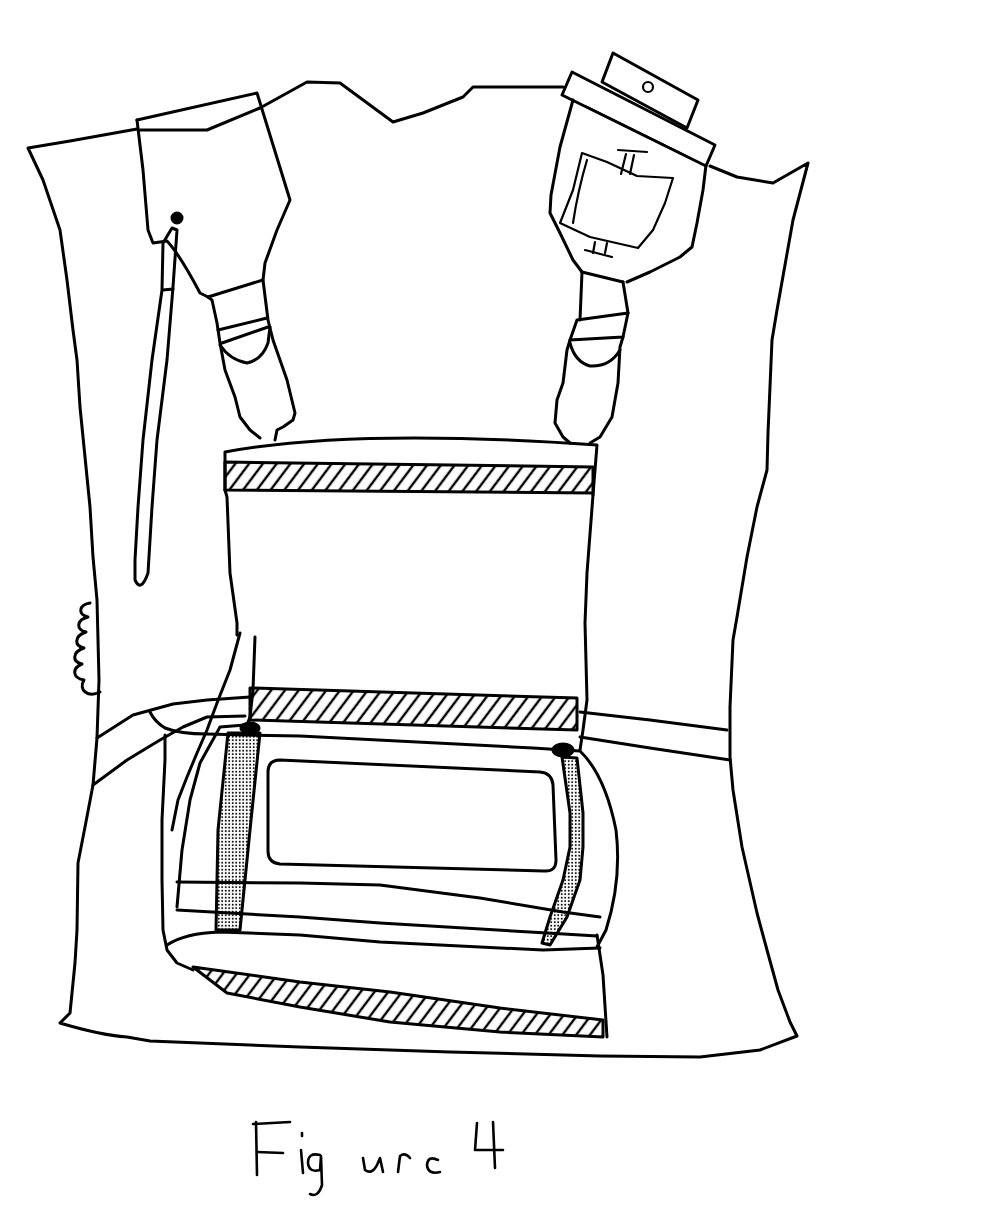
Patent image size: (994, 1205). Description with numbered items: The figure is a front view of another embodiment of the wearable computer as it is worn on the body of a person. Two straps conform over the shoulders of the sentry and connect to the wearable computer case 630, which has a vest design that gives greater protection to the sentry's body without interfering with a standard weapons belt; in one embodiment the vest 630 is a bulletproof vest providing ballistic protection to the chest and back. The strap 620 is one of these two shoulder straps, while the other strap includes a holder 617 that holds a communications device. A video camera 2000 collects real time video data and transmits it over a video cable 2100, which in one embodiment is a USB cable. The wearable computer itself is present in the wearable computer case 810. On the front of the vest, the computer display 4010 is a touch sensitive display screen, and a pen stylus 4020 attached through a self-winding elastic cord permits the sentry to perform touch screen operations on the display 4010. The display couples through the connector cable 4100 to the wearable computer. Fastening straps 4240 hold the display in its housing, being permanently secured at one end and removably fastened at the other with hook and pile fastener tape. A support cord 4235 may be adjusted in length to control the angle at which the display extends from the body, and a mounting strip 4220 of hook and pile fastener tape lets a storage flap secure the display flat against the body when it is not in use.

The video camera 2000 is at (632, 55).
The video cable 2100 is at (567, 95).
The holder 617 is at (593, 197).
The wearable computer case 810 is at (688, 207).
The strap 620 is at (140, 167).
The wearable computer case 630 is at (357, 440).
The mounting strip 4220 is at (593, 477).
The pen stylus 4020 is at (145, 433).
The support cord 4235 is at (228, 665).
The connector cable 4100 is at (77, 668).
The display screen 4010 is at (600, 823).
The fastening straps 4240 is at (177, 910).